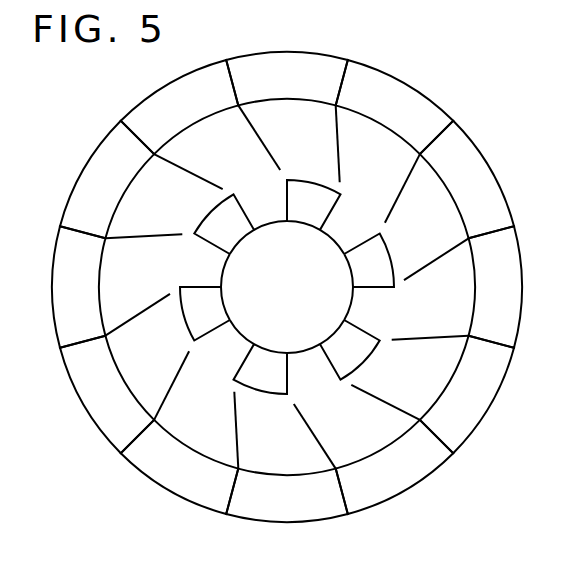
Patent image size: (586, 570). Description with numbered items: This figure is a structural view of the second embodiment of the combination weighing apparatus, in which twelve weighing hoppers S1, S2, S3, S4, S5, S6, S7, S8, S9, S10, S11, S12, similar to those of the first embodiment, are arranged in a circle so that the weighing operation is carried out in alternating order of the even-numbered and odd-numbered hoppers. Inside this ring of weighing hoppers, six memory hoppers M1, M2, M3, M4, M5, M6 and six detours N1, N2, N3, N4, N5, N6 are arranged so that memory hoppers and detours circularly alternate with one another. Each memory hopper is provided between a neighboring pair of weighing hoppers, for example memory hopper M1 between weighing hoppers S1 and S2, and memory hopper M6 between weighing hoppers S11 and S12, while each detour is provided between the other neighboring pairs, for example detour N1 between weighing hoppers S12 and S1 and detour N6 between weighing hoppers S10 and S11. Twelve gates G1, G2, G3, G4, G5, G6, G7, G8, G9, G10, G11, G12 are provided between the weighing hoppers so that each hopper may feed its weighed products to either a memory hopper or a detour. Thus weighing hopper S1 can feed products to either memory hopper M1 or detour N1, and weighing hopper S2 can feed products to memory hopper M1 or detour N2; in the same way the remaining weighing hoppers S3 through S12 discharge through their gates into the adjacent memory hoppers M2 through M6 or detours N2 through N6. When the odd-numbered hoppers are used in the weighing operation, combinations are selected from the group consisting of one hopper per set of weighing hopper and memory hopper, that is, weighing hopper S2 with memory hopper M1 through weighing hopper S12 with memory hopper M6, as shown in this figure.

The weighing hopper S1 is at (287, 78).
The weighing hopper S2 is at (395, 107).
The weighing hopper S3 is at (467, 180).
The weighing hopper S4 is at (495, 287).
The weighing hopper S5 is at (467, 395).
The weighing hopper S6 is at (395, 467).
The weighing hopper S7 is at (287, 495).
The weighing hopper S8 is at (180, 467).
The weighing hopper S9 is at (107, 395).
The weighing hopper S10 is at (78, 287).
The weighing hopper S11 is at (107, 180).
The weighing hopper S12 is at (180, 107).
The gate G1 is at (265, 140).
The gate G2 is at (338, 147).
The gate G3 is at (402, 192).
The gate G4 is at (427, 266).
The gate G5 is at (423, 342).
The gate G6 is at (378, 403).
The gate G7 is at (311, 430).
The gate G8 is at (235, 432).
The gate G9 is at (173, 383).
The gate G10 is at (150, 306).
The gate G11 is at (157, 235).
The gate G12 is at (200, 176).
The memory hopper M1 is at (314, 205).
The memory hopper M2 is at (369, 261).
The memory hopper M3 is at (350, 350).
The memory hopper M4 is at (261, 369).
The memory hopper M5 is at (205, 314).
The memory hopper M6 is at (224, 224).
The detour N1 is at (269, 210).
The detour N2 is at (341, 232).
The detour N3 is at (363, 305).
The detour N4 is at (305, 363).
The detour N5 is at (232, 341).
The detour N6 is at (210, 269).